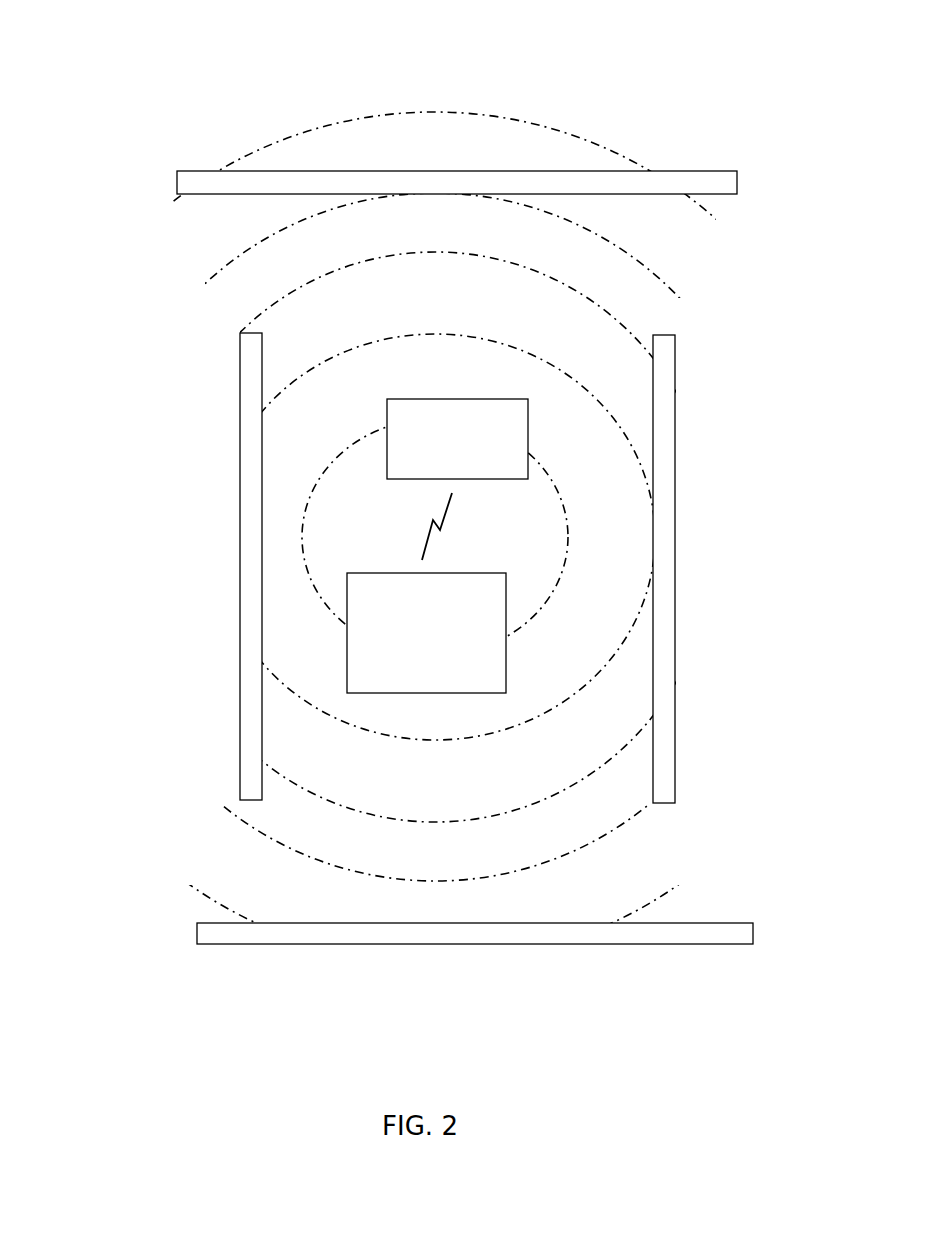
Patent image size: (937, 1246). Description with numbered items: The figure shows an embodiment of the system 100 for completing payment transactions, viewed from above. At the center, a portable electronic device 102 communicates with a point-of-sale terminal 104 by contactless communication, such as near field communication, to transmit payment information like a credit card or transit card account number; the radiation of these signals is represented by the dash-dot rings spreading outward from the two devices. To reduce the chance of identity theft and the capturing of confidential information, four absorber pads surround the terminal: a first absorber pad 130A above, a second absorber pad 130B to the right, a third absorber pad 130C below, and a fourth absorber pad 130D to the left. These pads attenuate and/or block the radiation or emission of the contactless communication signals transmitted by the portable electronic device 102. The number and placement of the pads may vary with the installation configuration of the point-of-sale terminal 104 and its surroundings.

The system 100 is at (156, 62).
The portable electronic device 102 is at (460, 693).
The point-of-sale (POS) terminal 104 is at (458, 399).
The first absorber pad 130A is at (455, 171).
The second absorber pad 130B is at (675, 558).
The third absorber pad 130C is at (562, 945).
The fourth absorber pad 130D is at (240, 532).